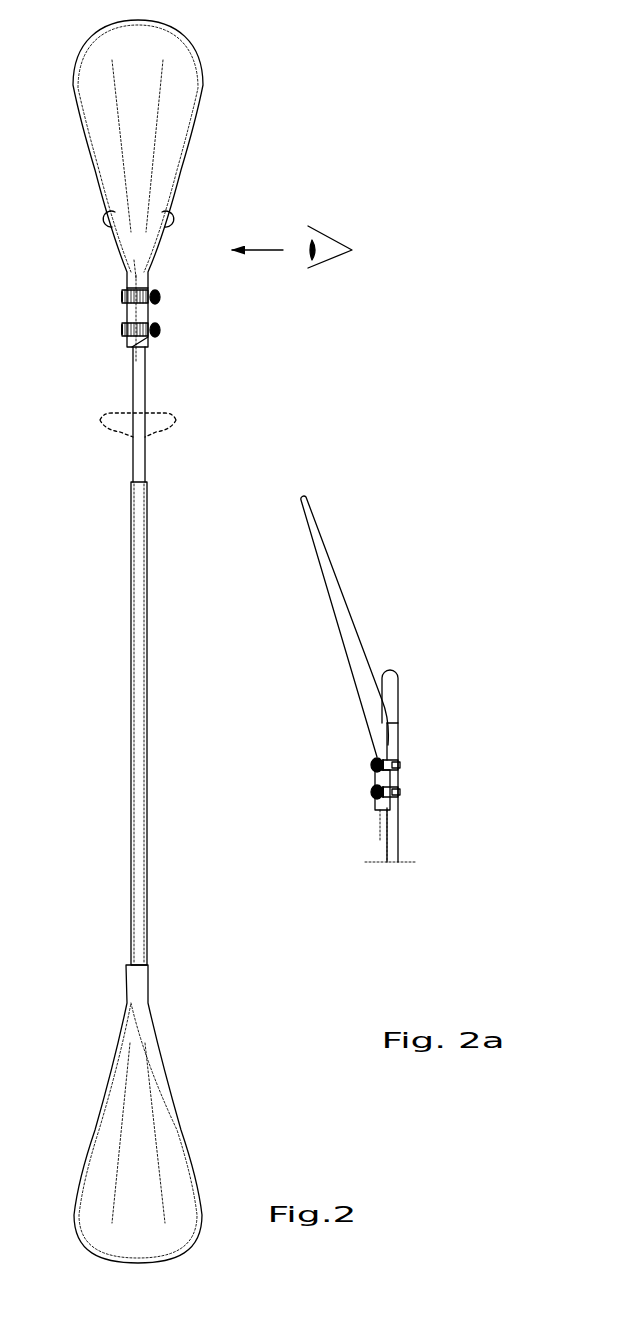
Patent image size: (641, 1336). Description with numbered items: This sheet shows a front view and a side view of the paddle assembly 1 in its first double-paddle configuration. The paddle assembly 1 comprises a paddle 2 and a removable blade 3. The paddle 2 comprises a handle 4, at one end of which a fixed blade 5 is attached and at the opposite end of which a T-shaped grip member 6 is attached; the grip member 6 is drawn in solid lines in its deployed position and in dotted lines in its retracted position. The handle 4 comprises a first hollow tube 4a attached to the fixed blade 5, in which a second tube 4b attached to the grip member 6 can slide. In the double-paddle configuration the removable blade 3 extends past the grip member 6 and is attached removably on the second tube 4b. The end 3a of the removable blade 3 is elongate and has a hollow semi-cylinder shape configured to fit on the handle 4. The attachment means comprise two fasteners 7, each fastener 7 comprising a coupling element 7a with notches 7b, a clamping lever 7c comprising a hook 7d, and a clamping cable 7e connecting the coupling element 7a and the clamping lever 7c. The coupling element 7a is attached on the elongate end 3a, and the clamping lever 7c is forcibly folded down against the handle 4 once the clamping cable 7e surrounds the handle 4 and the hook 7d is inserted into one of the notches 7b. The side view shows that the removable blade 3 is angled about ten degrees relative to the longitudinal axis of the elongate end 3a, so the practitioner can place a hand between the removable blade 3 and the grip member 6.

In FIG. 2, the paddle assembly 1 is at (254, 936).
In FIG. 2A, the paddle assembly 1 is at (465, 631).
In FIG. 2, the paddle 2 is at (149, 727).
In FIG. 2A, the paddle 2 is at (403, 825).
In FIG. 2, the removable blade 3 is at (203, 82).
In FIG. 2A, the removable blade 3 is at (317, 560).
In FIG. 2, the elongate end of the removable blade 3a is at (137, 357).
In FIG. 2A, the elongate end of the removable blade 3a is at (378, 812).
In FIG. 2, the handle 4 is at (130, 785).
In FIG. 2A, the handle 4 is at (376, 848).
In FIG. 2, the first hollow tube 4a is at (138, 708).
In FIG. 2, the second tube 4b is at (140, 383).
In FIG. 2A, the second tube 4b is at (392, 842).
In FIG. 2, the fixed blade 5 is at (173, 1090).
In FIG. 2, the grip member 6 is at (177, 219).
In FIG. 2A, the grip member 6 is at (391, 668).
In FIG. 2, the fastener 7 is at (121, 297).
In FIG. 2A, the fastener 7 is at (367, 754).
In FIG. 2, the coupling element 7a is at (122, 294).
In FIG. 2A, the coupling element 7a is at (371, 765).
In FIG. 2, the notches 7b is at (153, 258).
In FIG. 2A, the clamping lever 7c is at (392, 760).
In FIG. 2, the hook 7d is at (160, 298).
In FIG. 2A, the clamping cable 7e is at (399, 764).